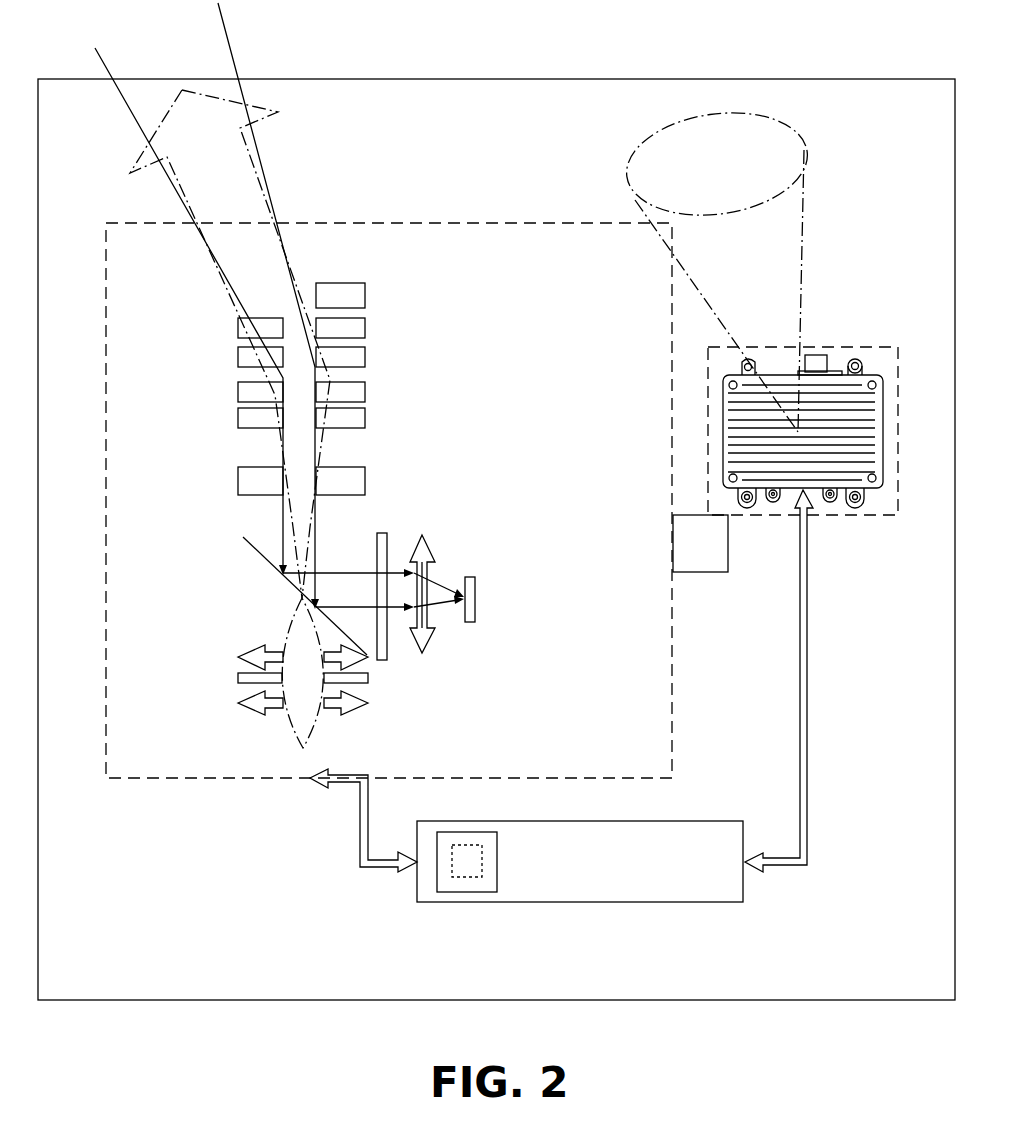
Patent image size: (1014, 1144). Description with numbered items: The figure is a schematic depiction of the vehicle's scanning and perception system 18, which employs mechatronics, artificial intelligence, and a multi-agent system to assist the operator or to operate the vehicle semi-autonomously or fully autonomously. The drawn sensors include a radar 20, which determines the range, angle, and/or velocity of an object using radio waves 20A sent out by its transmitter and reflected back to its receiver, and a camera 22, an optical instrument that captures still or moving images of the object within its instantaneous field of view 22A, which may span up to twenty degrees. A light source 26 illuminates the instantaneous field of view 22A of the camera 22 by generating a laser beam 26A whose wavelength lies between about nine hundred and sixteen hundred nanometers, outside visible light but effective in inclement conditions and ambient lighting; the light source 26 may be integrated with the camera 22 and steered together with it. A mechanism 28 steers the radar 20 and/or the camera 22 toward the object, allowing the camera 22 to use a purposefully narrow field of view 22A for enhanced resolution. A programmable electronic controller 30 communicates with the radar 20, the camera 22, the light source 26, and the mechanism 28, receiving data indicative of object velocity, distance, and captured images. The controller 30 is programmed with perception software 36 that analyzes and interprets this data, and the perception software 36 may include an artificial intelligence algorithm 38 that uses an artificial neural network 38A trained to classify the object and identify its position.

The scanning and perception system 18 is at (858, 120).
The radar 20 is at (855, 347).
The radio waves 20A is at (803, 237).
The camera 22 is at (107, 290).
The instantaneous field of view 22A is at (122, 100).
The light source 26 is at (243, 707).
The laser beam 26A is at (257, 160).
The mechanism 28 is at (689, 556).
The electronic controller 30 is at (683, 888).
The perception software 36 is at (488, 897).
The artificial intelligence algorithm 38 is at (455, 892).
The artificial neural network 38A is at (448, 868).